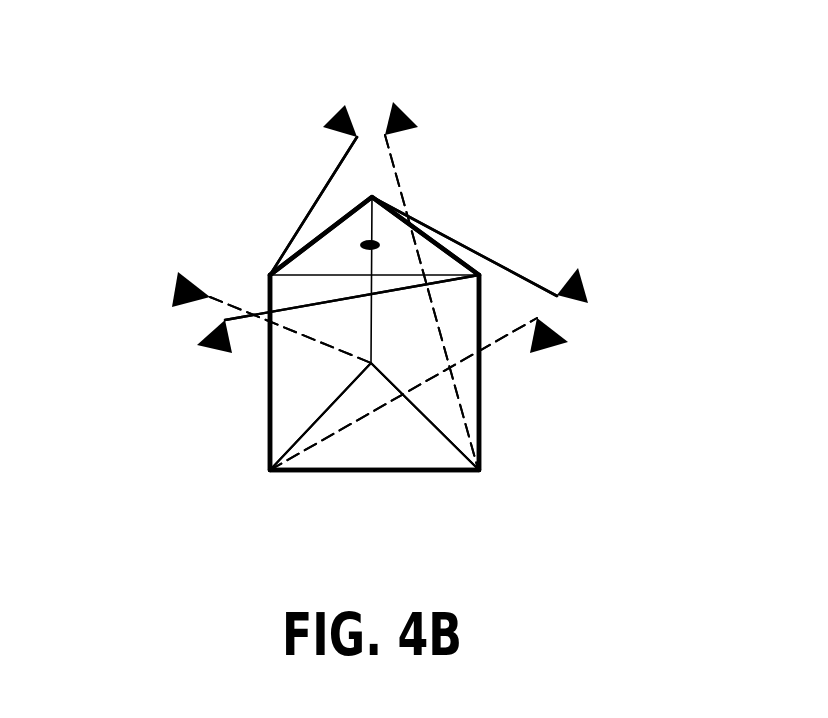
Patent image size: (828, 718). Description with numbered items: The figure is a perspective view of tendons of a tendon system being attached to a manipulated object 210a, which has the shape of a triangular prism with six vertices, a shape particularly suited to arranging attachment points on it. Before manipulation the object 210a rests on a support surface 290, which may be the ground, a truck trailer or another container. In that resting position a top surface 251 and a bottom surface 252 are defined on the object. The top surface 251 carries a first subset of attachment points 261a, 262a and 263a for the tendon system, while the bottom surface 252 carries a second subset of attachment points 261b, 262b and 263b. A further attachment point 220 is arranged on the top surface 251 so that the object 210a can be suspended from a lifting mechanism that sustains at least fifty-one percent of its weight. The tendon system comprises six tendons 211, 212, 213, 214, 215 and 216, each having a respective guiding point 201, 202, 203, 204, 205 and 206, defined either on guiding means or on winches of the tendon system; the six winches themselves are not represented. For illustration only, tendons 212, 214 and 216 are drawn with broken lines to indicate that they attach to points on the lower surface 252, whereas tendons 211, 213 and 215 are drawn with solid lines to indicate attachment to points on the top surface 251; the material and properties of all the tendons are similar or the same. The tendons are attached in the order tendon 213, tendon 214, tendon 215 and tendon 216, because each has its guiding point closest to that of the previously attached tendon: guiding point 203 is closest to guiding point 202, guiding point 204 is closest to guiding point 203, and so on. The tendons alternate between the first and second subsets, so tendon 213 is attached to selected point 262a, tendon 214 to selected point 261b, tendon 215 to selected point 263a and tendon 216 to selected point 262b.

The guiding point 201 is at (338, 107).
The guiding point 202 is at (400, 103).
The guiding point 203 is at (589, 283).
The guiding point 204 is at (569, 341).
The guiding point 205 is at (197, 344).
The guiding point 206 is at (176, 290).
The manipulated object 210a is at (290, 408).
The tendon 211 is at (324, 183).
The tendon 212 is at (398, 173).
The tendon 213 is at (510, 268).
The tendon 214 is at (508, 338).
The tendon 215 is at (227, 318).
The tendon 216 is at (232, 306).
The attachment point 220 is at (379, 243).
The top surface 251 is at (333, 258).
The bottom surface 252 is at (432, 455).
The attachment point 261a is at (268, 272).
The attachment point 261b is at (268, 470).
The attachment point 262a is at (370, 196).
The attachment point 262b is at (372, 364).
The attachment point 263a is at (481, 272).
The attachment point 263b is at (480, 471).
The support surface 290 is at (248, 526).